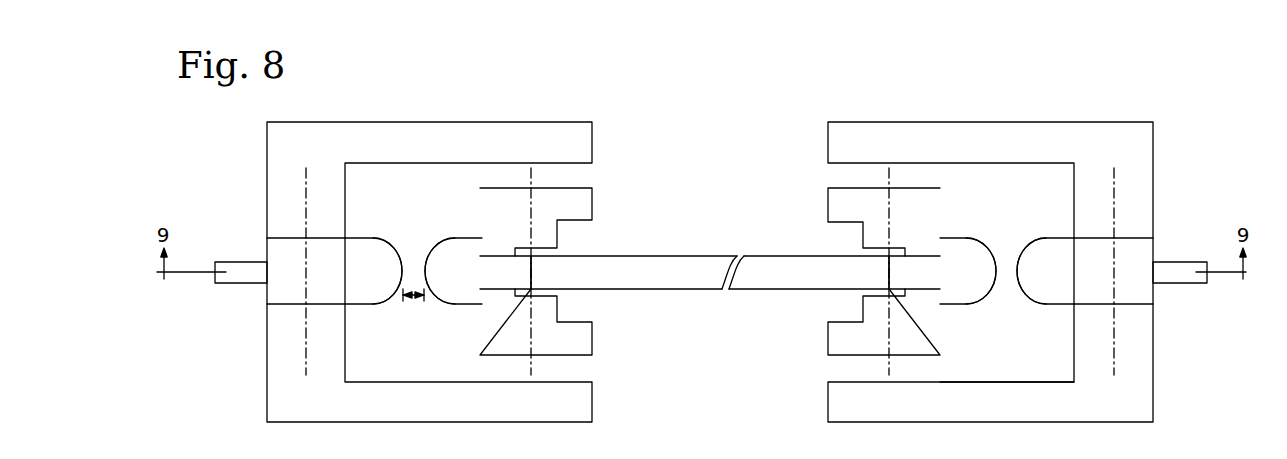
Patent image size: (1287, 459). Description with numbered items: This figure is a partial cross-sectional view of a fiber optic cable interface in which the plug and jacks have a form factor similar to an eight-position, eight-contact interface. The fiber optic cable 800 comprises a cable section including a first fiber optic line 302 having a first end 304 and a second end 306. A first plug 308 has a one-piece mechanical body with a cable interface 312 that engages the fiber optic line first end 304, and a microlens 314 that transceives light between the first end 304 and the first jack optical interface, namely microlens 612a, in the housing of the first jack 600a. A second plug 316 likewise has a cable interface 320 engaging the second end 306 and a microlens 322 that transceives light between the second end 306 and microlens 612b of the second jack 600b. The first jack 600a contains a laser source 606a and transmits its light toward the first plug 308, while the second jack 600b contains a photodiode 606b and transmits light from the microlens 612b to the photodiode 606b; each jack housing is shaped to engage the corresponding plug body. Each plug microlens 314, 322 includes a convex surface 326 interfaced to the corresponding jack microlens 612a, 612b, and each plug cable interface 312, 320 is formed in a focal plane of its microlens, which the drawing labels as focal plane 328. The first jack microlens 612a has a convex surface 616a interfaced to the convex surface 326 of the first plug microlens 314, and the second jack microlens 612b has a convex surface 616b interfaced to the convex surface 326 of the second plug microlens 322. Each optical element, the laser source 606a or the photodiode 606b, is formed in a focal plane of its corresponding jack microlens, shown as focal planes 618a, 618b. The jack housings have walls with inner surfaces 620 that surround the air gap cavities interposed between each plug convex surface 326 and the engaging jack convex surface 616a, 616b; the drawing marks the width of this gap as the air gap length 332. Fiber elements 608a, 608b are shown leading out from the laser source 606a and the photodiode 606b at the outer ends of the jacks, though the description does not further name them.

The fiber optic cable 800 is at (1080, 78).
The first jack 600a is at (492, 106).
The second jack 600b is at (956, 106).
The first plug 308 is at (616, 174).
The second plug 316 is at (786, 174).
The first fiber optic line 302 is at (775, 255).
The first end 304 is at (551, 282).
The second end 306 is at (829, 283).
The cable interface 312 is at (526, 270).
The cable interface 320 is at (894, 270).
The microlens 314 is at (435, 283).
The microlens 322 is at (948, 283).
The convex surface 326 is at (430, 243).
The focal plane of lens 328 is at (531, 313).
The air gap length 332 is at (412, 300).
The laser source 606a is at (275, 300).
The photodiode 606b is at (1098, 260).
The first optical fiber cable ferrule 608a is at (243, 261).
The second optical fiber cable ferrule 608b is at (1164, 261).
The first jack microlens 612a is at (348, 283).
The second jack microlens 612b is at (1022, 283).
The convex surface 616a is at (383, 235).
The convex surface 616b is at (1019, 242).
The first connector focal plane 618a is at (305, 343).
The second connector focal plane 618b is at (1114, 370).
The inner surfaces 620 is at (998, 377).